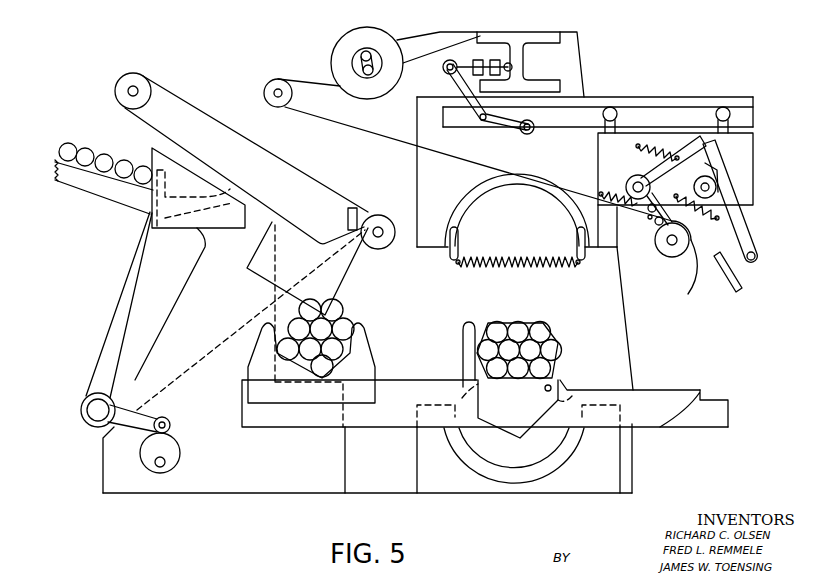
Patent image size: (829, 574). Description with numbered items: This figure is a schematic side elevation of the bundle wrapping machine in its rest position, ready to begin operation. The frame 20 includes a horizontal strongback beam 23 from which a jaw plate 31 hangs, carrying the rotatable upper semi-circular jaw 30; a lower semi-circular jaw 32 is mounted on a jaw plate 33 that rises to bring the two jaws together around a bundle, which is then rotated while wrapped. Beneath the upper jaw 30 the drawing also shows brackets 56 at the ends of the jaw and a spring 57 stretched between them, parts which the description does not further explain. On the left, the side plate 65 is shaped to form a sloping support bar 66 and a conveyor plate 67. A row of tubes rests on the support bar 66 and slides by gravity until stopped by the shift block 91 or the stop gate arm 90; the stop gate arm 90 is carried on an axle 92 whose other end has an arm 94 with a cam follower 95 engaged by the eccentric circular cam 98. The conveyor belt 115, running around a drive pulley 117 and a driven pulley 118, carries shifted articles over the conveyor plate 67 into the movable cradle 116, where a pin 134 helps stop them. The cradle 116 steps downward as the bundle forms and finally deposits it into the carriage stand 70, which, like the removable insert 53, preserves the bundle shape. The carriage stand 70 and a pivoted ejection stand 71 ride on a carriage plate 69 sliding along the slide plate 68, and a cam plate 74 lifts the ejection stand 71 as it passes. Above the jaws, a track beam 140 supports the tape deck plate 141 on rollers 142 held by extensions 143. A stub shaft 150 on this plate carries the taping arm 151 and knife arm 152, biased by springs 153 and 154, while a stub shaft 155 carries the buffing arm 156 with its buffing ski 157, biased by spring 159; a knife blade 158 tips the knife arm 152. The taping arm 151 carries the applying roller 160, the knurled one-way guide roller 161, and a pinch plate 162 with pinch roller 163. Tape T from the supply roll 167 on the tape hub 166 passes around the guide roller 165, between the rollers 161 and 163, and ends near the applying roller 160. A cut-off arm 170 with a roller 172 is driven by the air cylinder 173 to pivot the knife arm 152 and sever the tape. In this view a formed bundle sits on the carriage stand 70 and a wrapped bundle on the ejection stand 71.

The frame 20 is at (589, 52).
The strongback beam 23 is at (519, 32).
The upper semi-circularly shaped jaw 30 is at (483, 193).
The jaw plate 31 is at (417, 177).
The lower semi-circularly shaped jaw 32 is at (572, 444).
The jaw plate 33 is at (611, 478).
The removable insert 53 is at (540, 460).
The spring bracket 56 is at (450, 258).
The spring 57 is at (521, 270).
The side plate 65 is at (203, 277).
The support bar 66 is at (106, 197).
The conveyor plate 67 is at (272, 226).
The slide plate 68 is at (658, 394).
The carriage plate 69 is at (393, 378).
The carriage stand 70 is at (363, 334).
The ejection stand 71 is at (470, 343).
The cam plate 74 is at (715, 413).
The stop gate arm 90 is at (140, 258).
The shift block 91 is at (153, 156).
The axle 92 is at (98, 418).
The arm 94 is at (118, 428).
The cam follower 95 is at (165, 418).
The circularly shaped cam 98 is at (176, 455).
The conveyor belt 115 is at (194, 143).
The movable cradle 116 is at (340, 272).
The drive pulley 117 is at (116, 78).
The driven pulley 118 is at (384, 223).
The pin 134 is at (346, 214).
The track beam 140 is at (755, 113).
The tape deck plate 141 is at (754, 156).
The rollers 142 is at (606, 106).
The extensions 143 is at (614, 121).
The stub shaft 150 is at (634, 180).
The taping arm 151 is at (640, 226).
The knife arm 152 is at (695, 149).
The spring 153 is at (618, 194).
The spring 154 is at (660, 153).
The stub shaft 155 is at (700, 191).
The buffing arm 156 is at (747, 239).
The buffing ski 157 is at (741, 280).
The knife blade 158 is at (718, 189).
The spring 159 is at (678, 208).
The applying roller 160 is at (679, 251).
The knurled one-way guide roller 161 is at (653, 234).
The pinch plate 162 is at (648, 218).
The pinch roller 163 is at (688, 292).
The guide roller 165 is at (266, 88).
The tape hub 166 is at (358, 60).
The supply roll 167 is at (365, 35).
The cut-off arm 170 is at (460, 80).
The roller 172 is at (527, 134).
The single-acting spring-return air cylinder 173 is at (500, 55).
The tape T is at (466, 166).